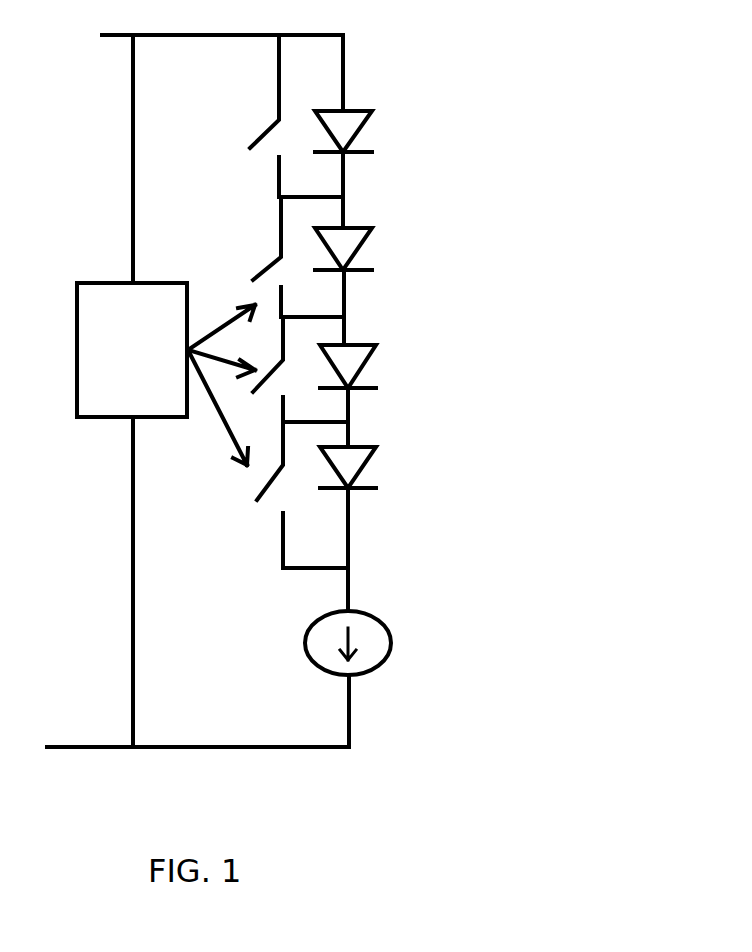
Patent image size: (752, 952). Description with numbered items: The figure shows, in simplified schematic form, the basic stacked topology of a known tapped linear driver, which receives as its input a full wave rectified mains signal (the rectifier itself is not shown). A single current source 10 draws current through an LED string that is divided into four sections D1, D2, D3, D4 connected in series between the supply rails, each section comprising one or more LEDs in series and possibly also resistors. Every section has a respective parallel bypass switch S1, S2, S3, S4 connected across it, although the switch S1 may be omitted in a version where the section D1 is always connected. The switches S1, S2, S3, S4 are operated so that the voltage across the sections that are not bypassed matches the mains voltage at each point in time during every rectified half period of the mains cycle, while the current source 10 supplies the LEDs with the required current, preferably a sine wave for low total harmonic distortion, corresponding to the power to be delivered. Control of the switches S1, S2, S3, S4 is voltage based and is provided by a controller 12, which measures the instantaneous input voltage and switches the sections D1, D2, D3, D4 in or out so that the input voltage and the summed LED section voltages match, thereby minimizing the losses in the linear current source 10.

The current source 10 is at (383, 620).
The controller 12 is at (90, 283).
The parallel bypass switch S1 is at (280, 116).
The parallel bypass switch S2 is at (281, 257).
The parallel bypass switch S3 is at (283, 369).
The parallel bypass switch S4 is at (283, 495).
The LED string section D1 is at (368, 131).
The LED string section D2 is at (368, 245).
The LED string section D3 is at (371, 357).
The LED string section D4 is at (371, 460).